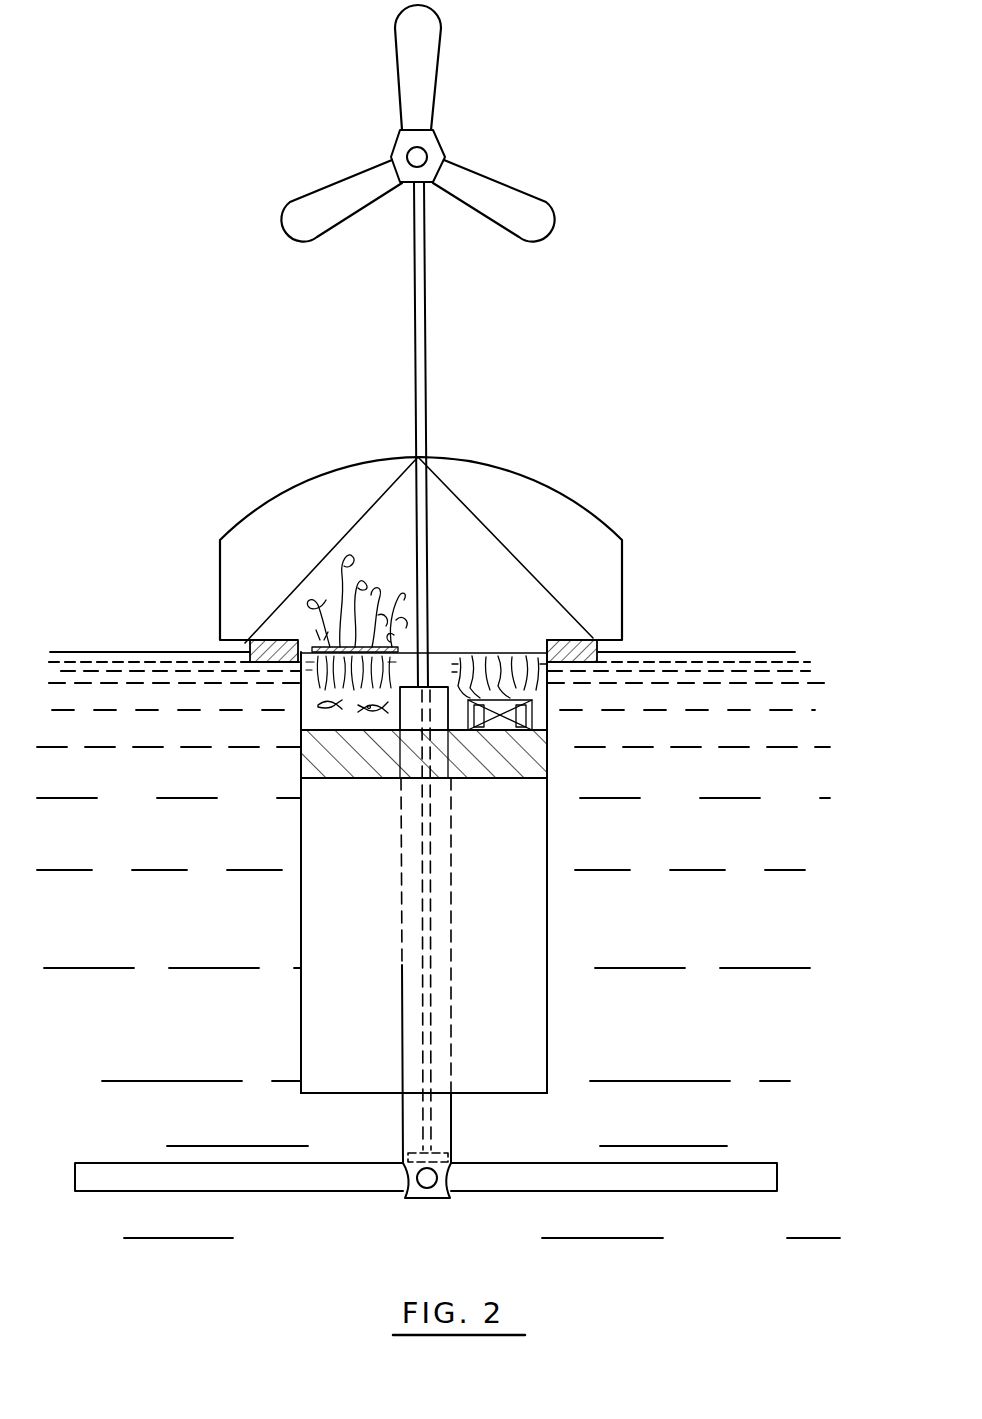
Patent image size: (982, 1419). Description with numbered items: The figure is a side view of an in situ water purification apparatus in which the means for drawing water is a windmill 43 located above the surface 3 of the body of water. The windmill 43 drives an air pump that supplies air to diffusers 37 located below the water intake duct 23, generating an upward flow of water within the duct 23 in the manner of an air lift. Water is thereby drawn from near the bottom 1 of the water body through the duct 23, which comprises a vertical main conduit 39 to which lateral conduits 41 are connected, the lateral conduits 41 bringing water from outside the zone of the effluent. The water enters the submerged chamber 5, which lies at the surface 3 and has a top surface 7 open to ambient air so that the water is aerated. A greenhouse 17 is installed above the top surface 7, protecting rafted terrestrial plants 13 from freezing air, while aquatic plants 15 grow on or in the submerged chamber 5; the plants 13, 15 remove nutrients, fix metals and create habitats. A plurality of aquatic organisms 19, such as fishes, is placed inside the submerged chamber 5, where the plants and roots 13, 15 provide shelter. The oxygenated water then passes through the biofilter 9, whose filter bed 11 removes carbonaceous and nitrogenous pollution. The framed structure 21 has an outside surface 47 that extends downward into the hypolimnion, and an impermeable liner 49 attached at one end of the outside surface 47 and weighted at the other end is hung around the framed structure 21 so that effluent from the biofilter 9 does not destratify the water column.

The bottom of the water body 1 is at (133, 1205).
The surface of the water body 3 is at (77, 678).
The submerged chamber 5 is at (300, 773).
The top surface of the submerged chamber 7 is at (502, 653).
The biofilter 9 is at (556, 663).
The filter bed 11 is at (300, 722).
The terrestrial plants 13 is at (373, 545).
The aquatic plants 15 is at (552, 677).
The greenhouse 17 is at (522, 470).
The aquatic organisms 19 is at (357, 708).
The framed structure 21 is at (278, 696).
The water intake duct 23 is at (385, 878).
The diffusers 37 is at (455, 1153).
The vertical main conduit 39 is at (437, 911).
The lateral conduits 41 is at (722, 1178).
The windmill 43 is at (438, 142).
The outside surface 47 is at (301, 762).
The impermeable liner 49 is at (552, 1018).